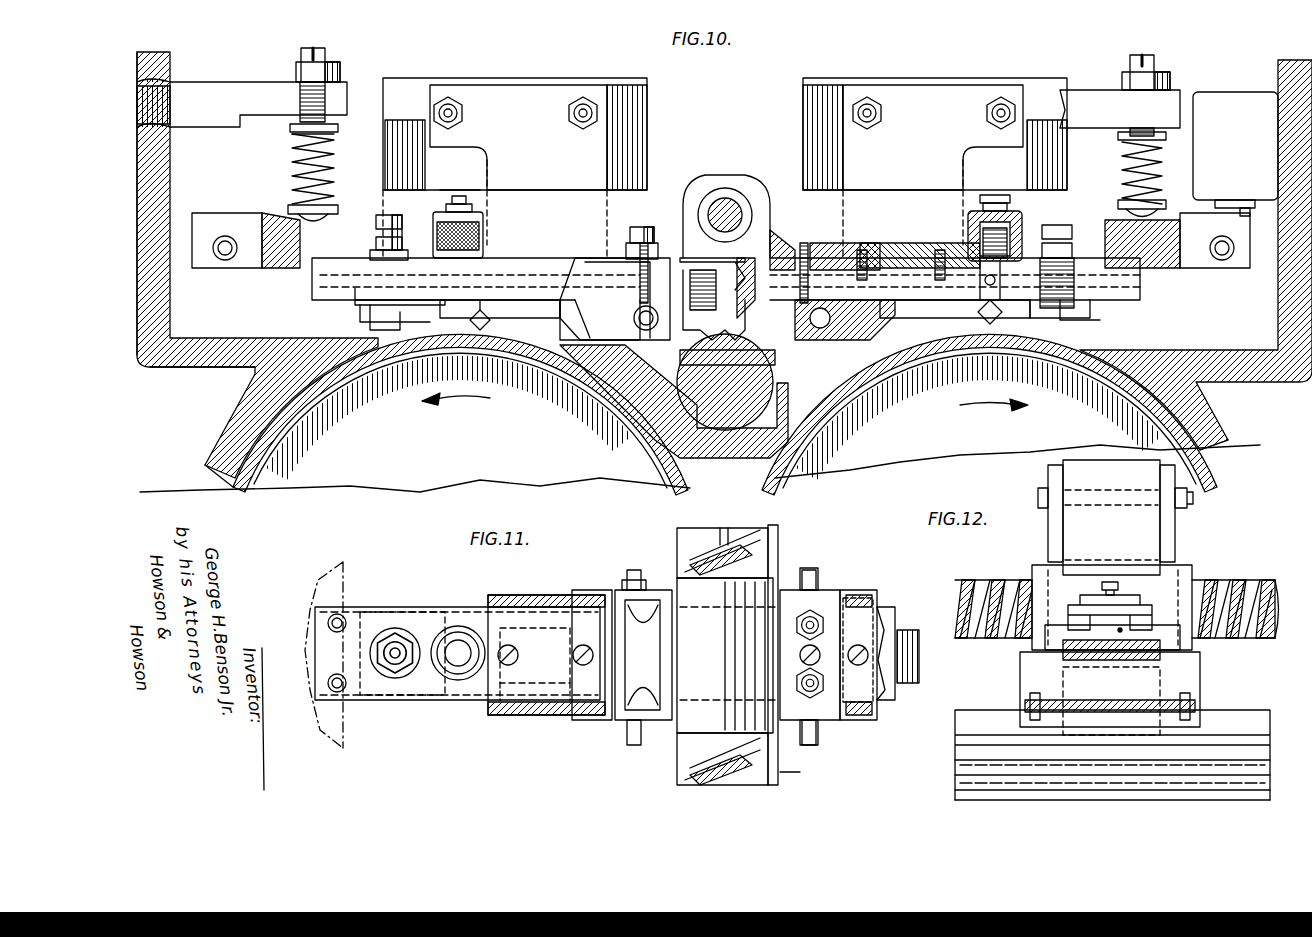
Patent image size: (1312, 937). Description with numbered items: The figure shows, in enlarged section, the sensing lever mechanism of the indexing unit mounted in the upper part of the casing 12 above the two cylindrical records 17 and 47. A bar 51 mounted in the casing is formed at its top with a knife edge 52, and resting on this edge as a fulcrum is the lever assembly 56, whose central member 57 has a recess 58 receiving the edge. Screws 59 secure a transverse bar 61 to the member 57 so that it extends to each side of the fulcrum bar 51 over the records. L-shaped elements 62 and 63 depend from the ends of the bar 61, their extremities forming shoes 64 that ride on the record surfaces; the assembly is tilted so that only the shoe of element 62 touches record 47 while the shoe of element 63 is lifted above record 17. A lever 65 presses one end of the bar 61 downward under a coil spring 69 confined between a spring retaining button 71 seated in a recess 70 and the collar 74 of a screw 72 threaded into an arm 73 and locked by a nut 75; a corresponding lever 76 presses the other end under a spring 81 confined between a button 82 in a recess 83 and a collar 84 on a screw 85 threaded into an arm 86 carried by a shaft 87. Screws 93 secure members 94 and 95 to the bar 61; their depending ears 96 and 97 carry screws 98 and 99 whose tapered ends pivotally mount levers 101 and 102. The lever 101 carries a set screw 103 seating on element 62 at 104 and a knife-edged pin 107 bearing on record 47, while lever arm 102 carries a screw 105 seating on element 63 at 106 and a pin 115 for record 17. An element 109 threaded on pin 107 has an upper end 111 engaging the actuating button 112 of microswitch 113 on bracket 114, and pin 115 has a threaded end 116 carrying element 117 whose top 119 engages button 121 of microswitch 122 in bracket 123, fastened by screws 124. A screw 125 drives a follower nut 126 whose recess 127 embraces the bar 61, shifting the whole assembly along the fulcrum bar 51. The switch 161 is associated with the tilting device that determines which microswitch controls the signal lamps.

In FIG. 10, the casing 12 is at (200, 368).
In FIG. 10, the cylindrical record 17 is at (1206, 450).
In FIG. 10, the record 47 is at (240, 486).
In FIG. 10, the bar 51 is at (650, 435).
In FIG. 11, the bar 51 is at (798, 772).
In FIG. 12, the bar 51 is at (1262, 765).
In FIG. 10, the knife edge 52 is at (690, 360).
In FIG. 11, the knife edge 52 is at (728, 530).
In FIG. 12, the knife edge 52 is at (1250, 712).
In FIG. 10, the lever assembly 56 is at (634, 226).
In FIG. 10, the central member 57 is at (700, 275).
In FIG. 11, the central member 57 is at (685, 568).
In FIG. 12, the central member 57 is at (1200, 663).
In FIG. 10, the recess 58 is at (700, 322).
In FIG. 10, the screws 59 is at (690, 270).
In FIG. 10, the transverse bar 61 is at (552, 262).
In FIG. 11, the transverse bar 61 is at (450, 610).
In FIG. 12, the transverse bar 61 is at (1120, 655).
In FIG. 10, the L-shaped element 62 is at (355, 300).
In FIG. 11, the L-shaped element 62 is at (378, 700).
In FIG. 10, the L-shaped element 63 is at (1095, 300).
In FIG. 10, the shoes 64 is at (458, 350).
In FIG. 10, the lever 65 is at (243, 272).
In FIG. 11, the lever 65 is at (325, 572).
In FIG. 10, the coil spring 69 is at (380, 158).
In FIG. 10, the recess 70 is at (298, 222).
In FIG. 10, the spring retaining button 71 is at (298, 206).
In FIG. 10, the screw 72 is at (322, 55).
In FIG. 10, the arm 73 is at (218, 87).
In FIG. 10, the collar 74 is at (338, 128).
In FIG. 10, the nut 75 is at (342, 70).
In FIG. 10, the lever 76 is at (1200, 272).
In FIG. 10, the spring 81 is at (1122, 160).
In FIG. 10, the button 82 is at (1160, 200).
In FIG. 10, the recess 83 is at (1160, 222).
In FIG. 10, the collar 84 is at (1118, 136).
In FIG. 10, the screw 85 is at (1136, 56).
In FIG. 10, the arm 86 is at (1075, 92).
In FIG. 10, the shaft 87 is at (1170, 75).
In FIG. 10, the screws 93 is at (650, 228).
In FIG. 10, the member 94 is at (635, 306).
In FIG. 11, the member 94 is at (620, 722).
In FIG. 10, the member 95 is at (890, 298).
In FIG. 11, the member 95 is at (830, 712).
In FIG. 10, the depending ears 96 is at (580, 300).
In FIG. 11, the depending ears 96 is at (590, 590).
In FIG. 10, the depending ears 97 is at (845, 333).
In FIG. 11, the depending ears 97 is at (860, 592).
In FIG. 10, the screws 98 is at (972, 167).
In FIG. 11, the screws 98 is at (638, 570).
In FIG. 11, the screws 99 is at (812, 572).
In FIG. 10, the lever 101 is at (545, 302).
In FIG. 11, the lever 101 is at (498, 680).
In FIG. 12, the lever 101 is at (1075, 735).
In FIG. 10, the lever arm 102 is at (916, 300).
In FIG. 11, the lever arm 102 is at (919, 658).
In FIG. 10, the set screw 103 is at (396, 222).
In FIG. 11, the set screw 103 is at (395, 650).
In FIG. 10, the seat of screw 103 on member 62 104 is at (370, 318).
In FIG. 10, the screw 105 is at (1065, 226).
In FIG. 10, the seat of screw 105 on member 63 106 is at (1085, 322).
In FIG. 10, the pin 107 is at (482, 314).
In FIG. 10, the element 109 is at (485, 237).
In FIG. 11, the element 109 is at (496, 640).
In FIG. 12, the element 109 is at (1082, 607).
In FIG. 10, the upper end 111 is at (472, 208).
In FIG. 11, the upper end 111 is at (458, 662).
In FIG. 10, the actuating button 112 is at (468, 200).
In FIG. 12, the actuating button 112 is at (1118, 587).
In FIG. 10, the microswitch 113 is at (420, 80).
In FIG. 12, the microswitch 113 is at (1111, 517).
In FIG. 10, the bracket 114 is at (512, 85).
In FIG. 11, the bracket 114 is at (505, 597).
In FIG. 12, the bracket 114 is at (1173, 535).
In FIG. 10, the pin 115 is at (980, 312).
In FIG. 10, the threaded upper end 116 is at (1012, 240).
In FIG. 10, the element 117 is at (1010, 215).
In FIG. 10, the top of element 117 119 is at (1000, 203).
In FIG. 10, the actuating button 121 is at (978, 199).
In FIG. 10, the microswitch 122 is at (880, 80).
In FIG. 10, the bracket 123 is at (975, 85).
In FIG. 11, the bracket 123 is at (875, 598).
In FIG. 10, the screws 124 is at (880, 243).
In FIG. 11, the screws 124 is at (518, 655).
In FIG. 10, the screw 125 is at (726, 205).
In FIG. 11, the screw 125 is at (776, 545).
In FIG. 12, the screw 125 is at (1272, 600).
In FIG. 10, the follower nut 126 is at (705, 195).
In FIG. 11, the follower nut 126 is at (726, 655).
In FIG. 12, the follower nut 126 is at (1192, 572).
In FIG. 10, the recess 127 is at (780, 240).
In FIG. 12, the recess 127 is at (1048, 643).
In FIG. 10, the switch 161 is at (1235, 100).